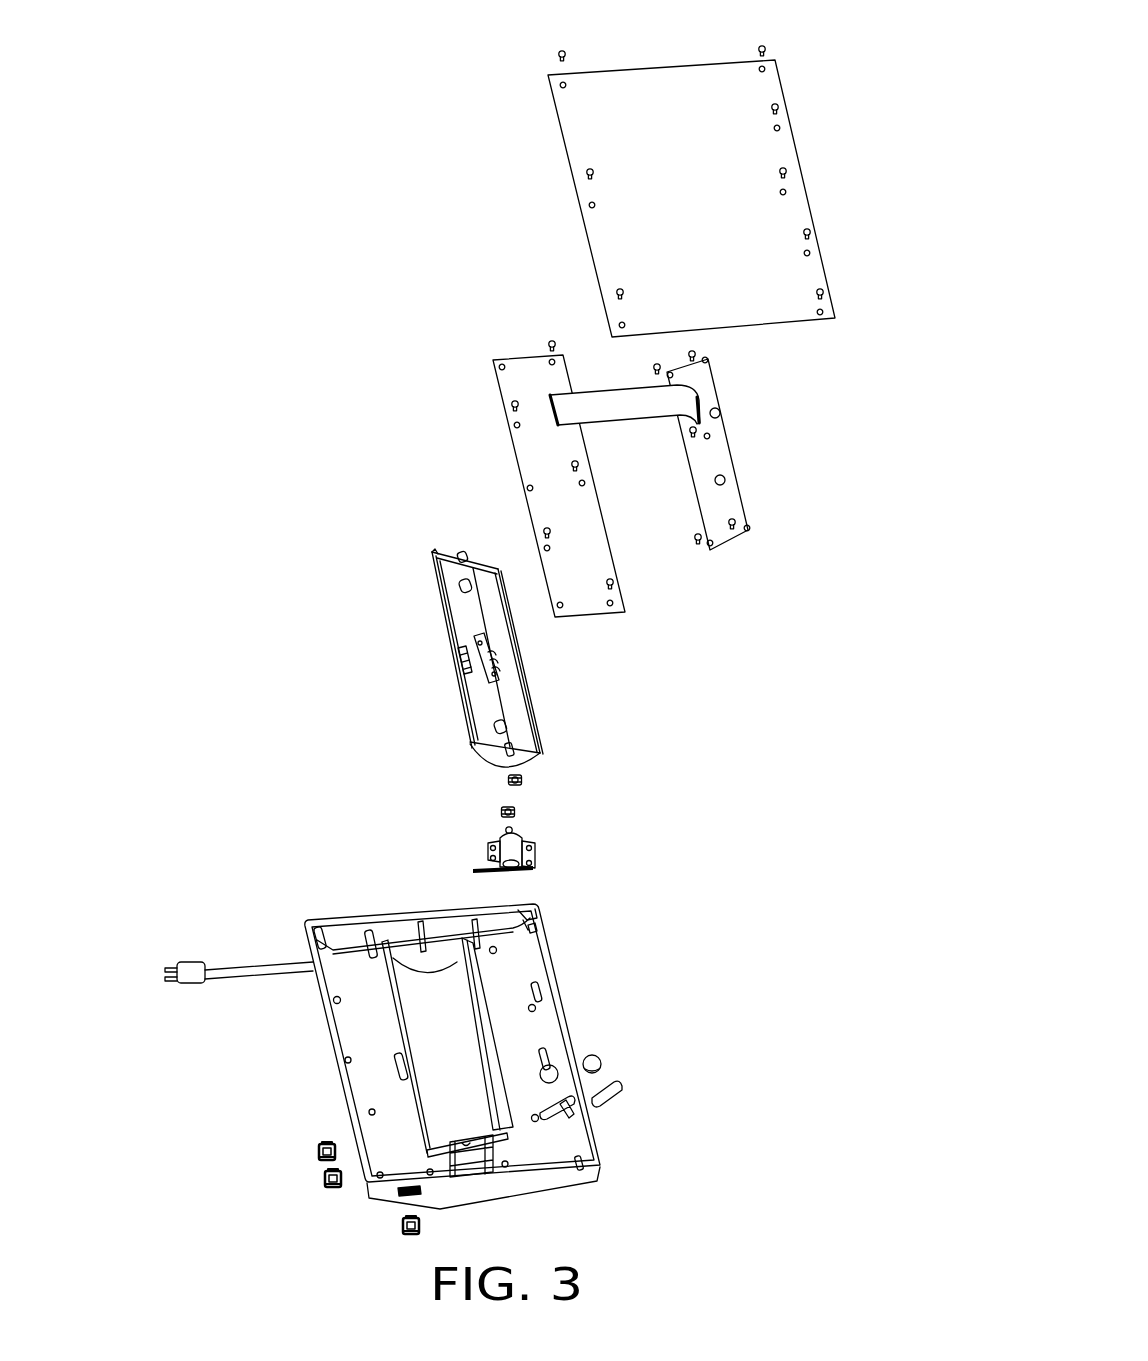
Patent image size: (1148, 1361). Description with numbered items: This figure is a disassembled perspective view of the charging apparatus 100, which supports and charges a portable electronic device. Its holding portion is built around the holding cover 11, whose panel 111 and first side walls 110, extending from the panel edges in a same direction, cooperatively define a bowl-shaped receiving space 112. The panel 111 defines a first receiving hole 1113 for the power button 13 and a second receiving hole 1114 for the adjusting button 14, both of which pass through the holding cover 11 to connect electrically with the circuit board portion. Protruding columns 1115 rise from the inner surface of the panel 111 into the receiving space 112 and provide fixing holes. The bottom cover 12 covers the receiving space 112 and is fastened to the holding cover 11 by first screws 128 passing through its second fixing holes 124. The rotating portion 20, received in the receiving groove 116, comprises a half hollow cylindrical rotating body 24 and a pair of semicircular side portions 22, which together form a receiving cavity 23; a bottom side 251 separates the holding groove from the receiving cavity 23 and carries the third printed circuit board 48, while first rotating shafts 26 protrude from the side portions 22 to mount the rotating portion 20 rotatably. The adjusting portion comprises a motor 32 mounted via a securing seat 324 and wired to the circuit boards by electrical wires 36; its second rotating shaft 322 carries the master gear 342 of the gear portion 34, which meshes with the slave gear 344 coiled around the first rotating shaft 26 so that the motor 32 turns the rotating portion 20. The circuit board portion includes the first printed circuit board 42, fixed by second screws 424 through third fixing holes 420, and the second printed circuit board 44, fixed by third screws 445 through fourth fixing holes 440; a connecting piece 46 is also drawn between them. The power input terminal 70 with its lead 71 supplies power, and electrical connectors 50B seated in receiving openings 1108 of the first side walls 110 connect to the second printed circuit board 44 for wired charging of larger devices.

The charging apparatus 100 is at (465, 46).
The bottom cover 12 is at (612, 128).
The first screws 128 is at (588, 170).
The second fixing holes 124 is at (590, 204).
The second printed circuit board 44 is at (522, 378).
The third screws 445 is at (511, 400).
The fourth fixing holes 440 is at (514, 424).
The first printed circuit board 42 is at (705, 383).
The connecting bracket 46 is at (628, 407).
The second screws 424 is at (734, 520).
The third fixing holes 420 is at (748, 527).
The rotating portion 20 is at (422, 533).
The receiving cavity 23 is at (487, 594).
The side portions 22 is at (450, 565).
The rotating body 24 is at (450, 628).
The third printed circuit board 48 is at (484, 646).
The bottom side 251 is at (490, 698).
The first rotating shafts 26 is at (543, 742).
The slave gear 344 is at (523, 780).
The master gear 342 is at (516, 812).
The gear portion 34 is at (630, 779).
The second rotating shaft 322 is at (512, 830).
The motor 32 is at (506, 845).
The electrical wires 36 is at (485, 866).
The securing seat 324 is at (532, 858).
The holding cover 11 is at (312, 898).
The first side walls 110 is at (410, 915).
The protruding columns 1115 is at (532, 913).
The power input terminal 70 is at (185, 968).
The power cable 71 is at (260, 966).
The panel 111 is at (513, 980).
The receiving groove 116 is at (440, 1060).
The first receiving hole 1113 is at (554, 1064).
The power button 13 is at (600, 1058).
The adjusting button 14 is at (614, 1086).
The second receiving hole 1114 is at (565, 1111).
The receiving space 112 is at (555, 1152).
The electrical connectors 50B is at (403, 1227).
The receiving openings 1108 is at (420, 1191).